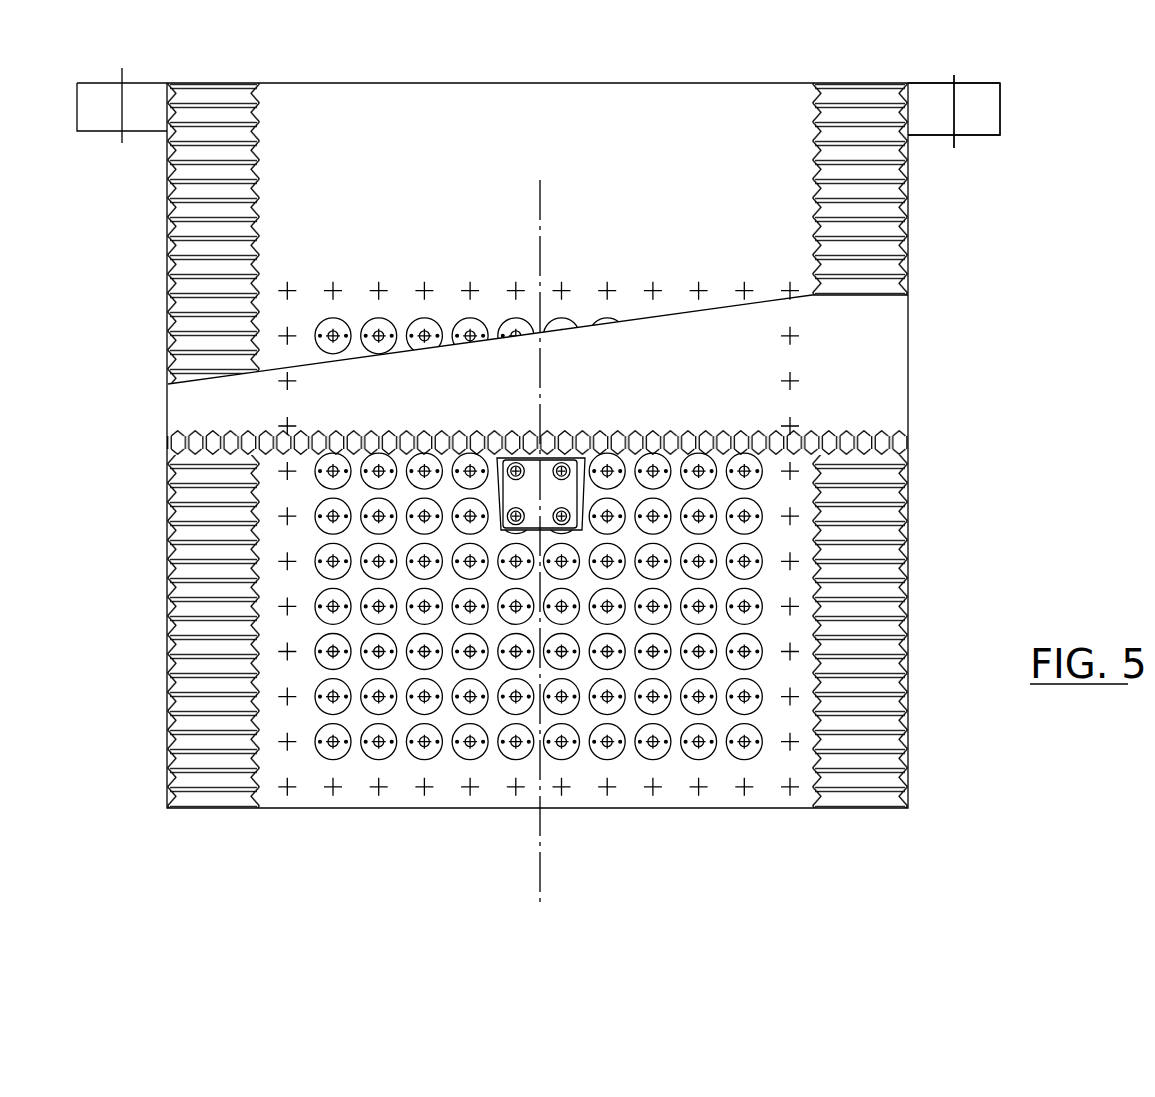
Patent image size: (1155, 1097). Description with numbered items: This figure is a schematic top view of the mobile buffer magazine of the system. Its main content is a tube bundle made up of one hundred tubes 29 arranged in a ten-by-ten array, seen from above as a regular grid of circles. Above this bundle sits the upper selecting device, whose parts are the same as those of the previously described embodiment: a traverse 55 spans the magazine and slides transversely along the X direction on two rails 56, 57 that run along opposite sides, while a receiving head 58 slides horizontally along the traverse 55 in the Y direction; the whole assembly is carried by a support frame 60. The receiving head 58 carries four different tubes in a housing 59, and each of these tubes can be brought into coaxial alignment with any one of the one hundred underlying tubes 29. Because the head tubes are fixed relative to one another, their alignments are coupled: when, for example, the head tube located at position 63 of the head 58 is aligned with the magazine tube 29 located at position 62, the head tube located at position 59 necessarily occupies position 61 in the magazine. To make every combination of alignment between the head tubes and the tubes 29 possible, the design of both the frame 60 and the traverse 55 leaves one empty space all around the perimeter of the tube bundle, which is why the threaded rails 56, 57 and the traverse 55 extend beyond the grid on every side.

The rail 56 is at (212, 107).
The rail 57 is at (857, 108).
The support frame 60 is at (990, 104).
The traverse 55 is at (890, 367).
The receiving head 58 is at (566, 440).
The position of the head 63 is at (557, 470).
The housing 59 is at (537, 494).
The tubes 29 is at (760, 555).
The position 61 is at (292, 790).
The position 62 is at (347, 763).